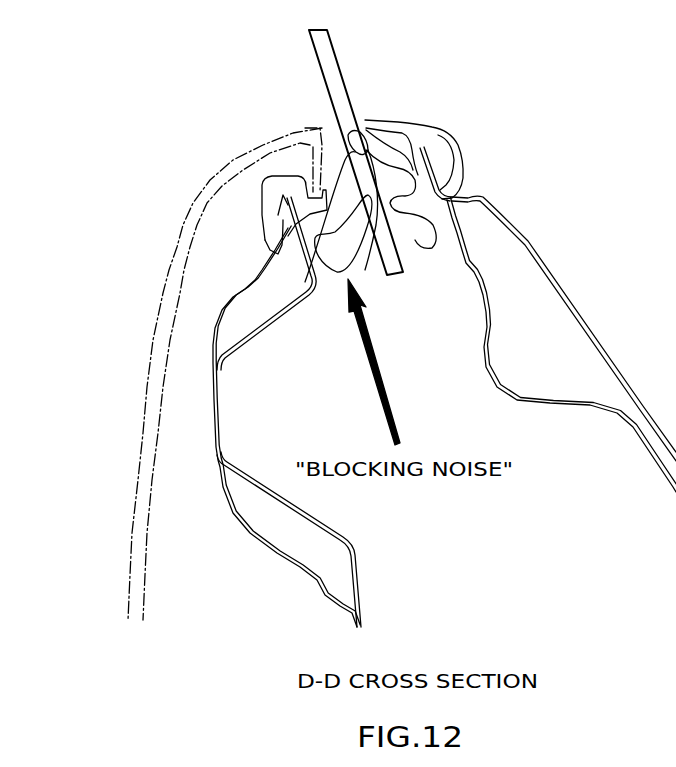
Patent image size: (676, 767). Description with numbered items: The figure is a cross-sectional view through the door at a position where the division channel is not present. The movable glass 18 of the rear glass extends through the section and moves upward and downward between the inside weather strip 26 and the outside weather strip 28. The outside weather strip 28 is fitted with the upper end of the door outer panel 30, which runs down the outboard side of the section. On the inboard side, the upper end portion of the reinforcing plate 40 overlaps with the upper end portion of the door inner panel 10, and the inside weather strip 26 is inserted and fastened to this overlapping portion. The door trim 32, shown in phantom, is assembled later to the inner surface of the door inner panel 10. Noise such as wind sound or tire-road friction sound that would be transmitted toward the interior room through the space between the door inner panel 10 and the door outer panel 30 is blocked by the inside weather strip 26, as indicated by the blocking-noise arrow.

The door inner panel 10 is at (231, 297).
The movable glass 18 is at (343, 78).
The inside weather strip 26 is at (333, 267).
The outside weather strip 28 is at (410, 213).
The door outer panel 30 is at (525, 240).
The door trim 32 is at (219, 168).
The reinforcing plate 40 is at (248, 342).